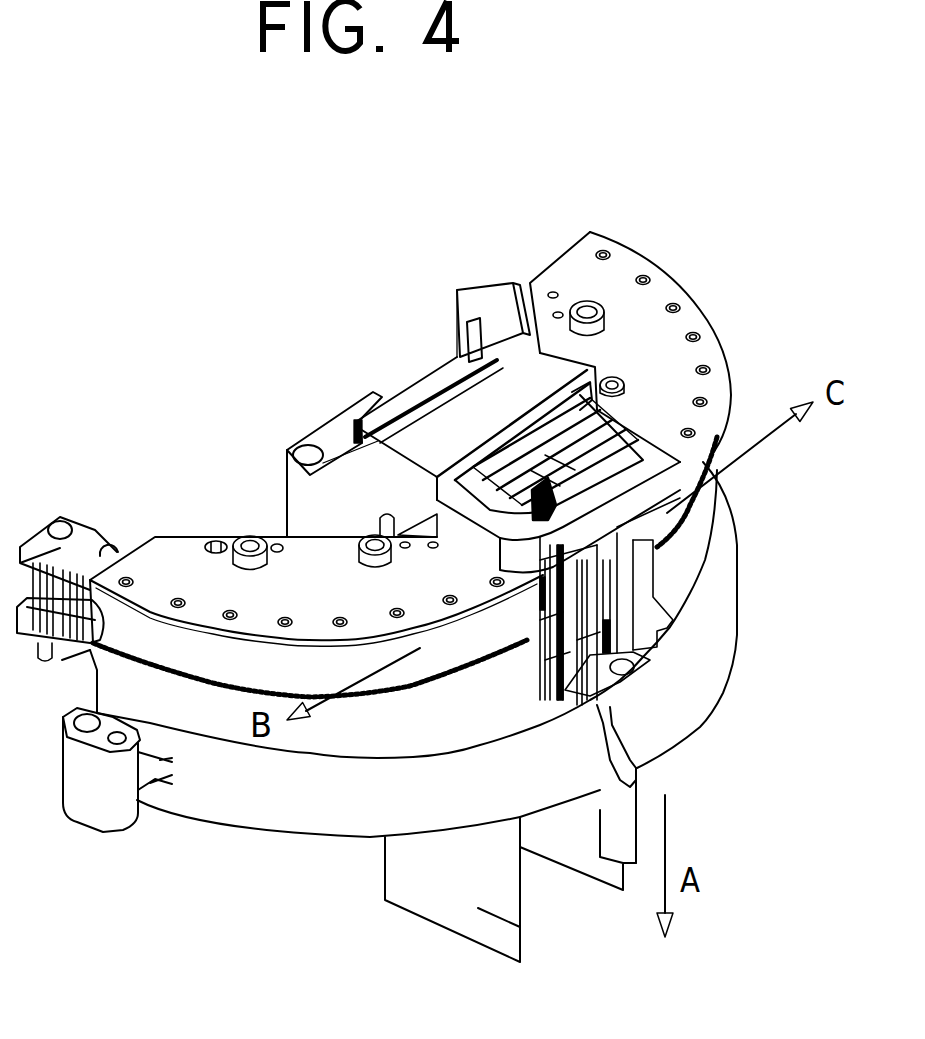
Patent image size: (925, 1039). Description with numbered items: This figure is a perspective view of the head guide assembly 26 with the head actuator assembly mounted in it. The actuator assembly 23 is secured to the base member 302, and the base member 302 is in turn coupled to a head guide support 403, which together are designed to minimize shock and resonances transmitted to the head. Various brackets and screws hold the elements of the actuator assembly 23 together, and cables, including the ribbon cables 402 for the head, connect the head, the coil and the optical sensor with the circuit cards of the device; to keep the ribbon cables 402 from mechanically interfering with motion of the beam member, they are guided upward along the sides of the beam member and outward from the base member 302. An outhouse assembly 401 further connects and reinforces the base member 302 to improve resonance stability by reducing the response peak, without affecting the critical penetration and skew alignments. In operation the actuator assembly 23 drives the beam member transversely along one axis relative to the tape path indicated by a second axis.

The head guide assembly 26 is at (205, 390).
The base member 302 is at (443, 355).
The actuator assembly 23 is at (603, 418).
The outhouse assembly 401 is at (283, 490).
The head guide support 403 is at (268, 812).
The ribbon cables 402 is at (570, 842).